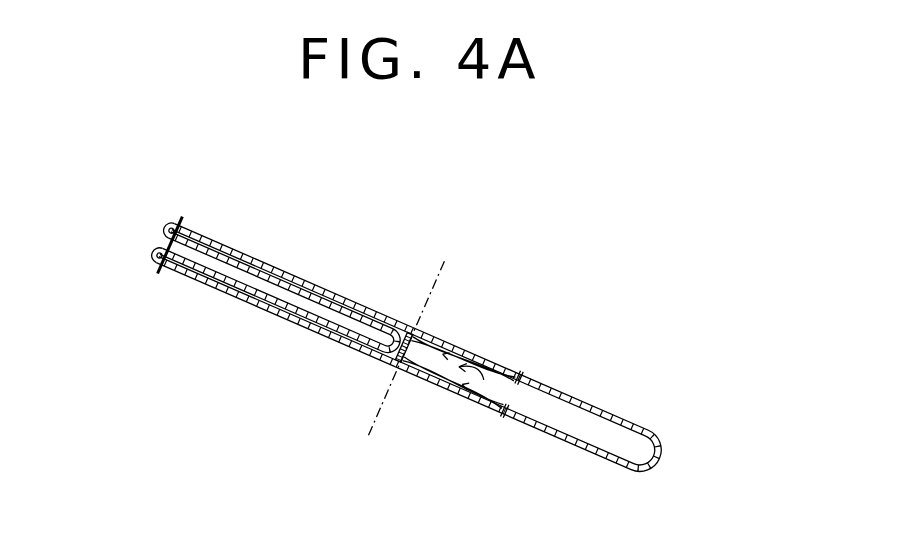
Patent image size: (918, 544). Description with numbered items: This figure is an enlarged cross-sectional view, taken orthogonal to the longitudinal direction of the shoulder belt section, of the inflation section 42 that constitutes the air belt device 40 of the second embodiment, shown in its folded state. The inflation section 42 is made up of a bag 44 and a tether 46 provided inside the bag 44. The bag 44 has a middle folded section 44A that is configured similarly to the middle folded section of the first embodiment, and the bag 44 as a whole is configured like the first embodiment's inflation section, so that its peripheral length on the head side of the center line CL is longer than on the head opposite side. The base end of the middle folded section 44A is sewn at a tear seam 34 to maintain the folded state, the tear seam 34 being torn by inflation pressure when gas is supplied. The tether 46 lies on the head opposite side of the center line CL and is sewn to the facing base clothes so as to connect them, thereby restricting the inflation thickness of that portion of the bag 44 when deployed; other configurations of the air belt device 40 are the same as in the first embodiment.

The tear seam 34 is at (158, 268).
The air belt device 40 is at (698, 311).
The inflation section 42 is at (623, 268).
The bag 44 is at (560, 392).
The middle folded section 44A is at (341, 306).
The tether 46 is at (487, 362).
The center line CL is at (415, 336).